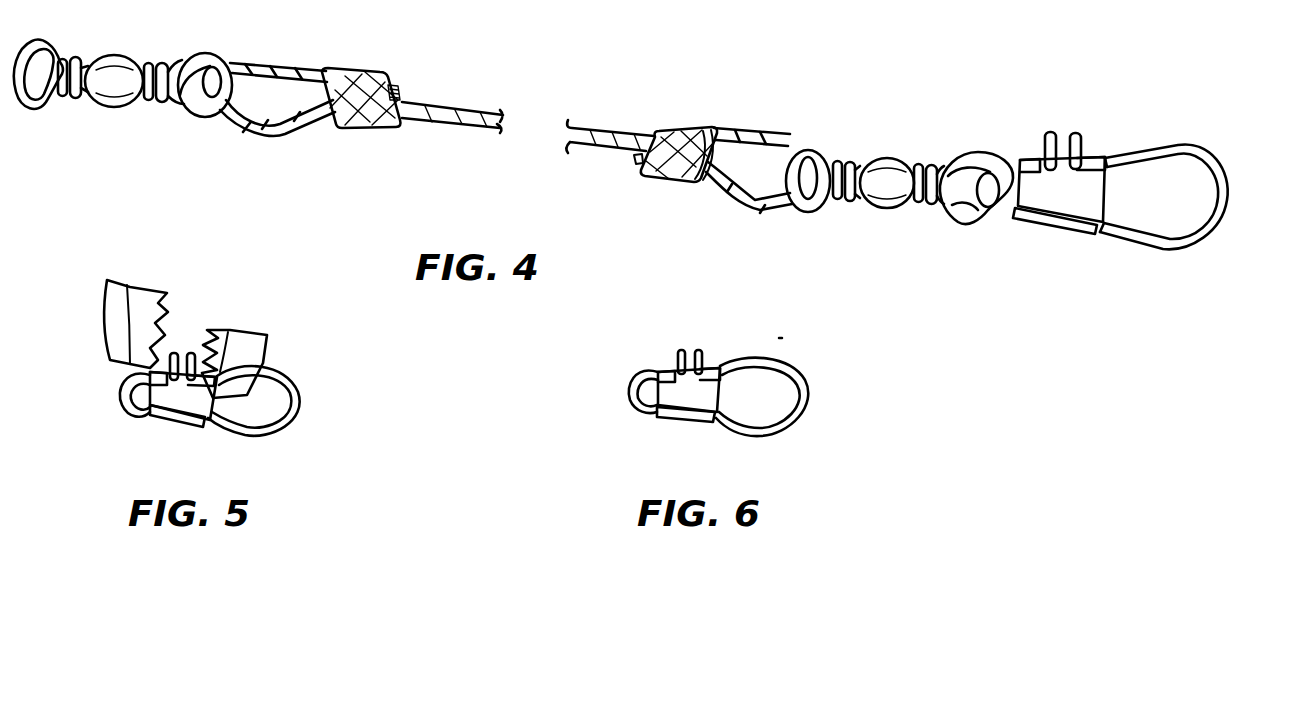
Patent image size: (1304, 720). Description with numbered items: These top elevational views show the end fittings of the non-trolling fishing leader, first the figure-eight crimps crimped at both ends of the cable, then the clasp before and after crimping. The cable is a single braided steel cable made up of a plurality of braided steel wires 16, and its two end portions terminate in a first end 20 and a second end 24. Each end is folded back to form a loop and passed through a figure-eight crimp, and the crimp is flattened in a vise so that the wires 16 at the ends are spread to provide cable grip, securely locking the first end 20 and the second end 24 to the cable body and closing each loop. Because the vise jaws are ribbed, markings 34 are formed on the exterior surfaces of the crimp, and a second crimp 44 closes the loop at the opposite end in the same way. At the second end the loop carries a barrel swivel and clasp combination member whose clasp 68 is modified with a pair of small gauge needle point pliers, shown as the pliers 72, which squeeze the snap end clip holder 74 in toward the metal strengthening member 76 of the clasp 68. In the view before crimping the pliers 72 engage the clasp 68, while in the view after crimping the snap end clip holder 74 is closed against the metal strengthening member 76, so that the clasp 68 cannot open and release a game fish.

In FIG. 4, the braided steel wires 16 is at (405, 98).
In FIG. 4, the first end 20 is at (400, 88).
In FIG. 4, the second end 24 is at (636, 168).
In FIG. 4, the markings 34 is at (348, 84).
In FIG. 4, the crimp sleeve 44 is at (700, 135).
In FIG. 5, the clasp 68 is at (241, 414).
In FIG. 6, the clasp 68 is at (752, 381).
In FIG. 5, the pliers jaws 72 is at (110, 325).
In FIG. 5, the snap end clip holder 74 is at (203, 383).
In FIG. 6, the snap end clip holder 74 is at (712, 364).
In FIG. 5, the metal strengthening member 76 is at (200, 400).